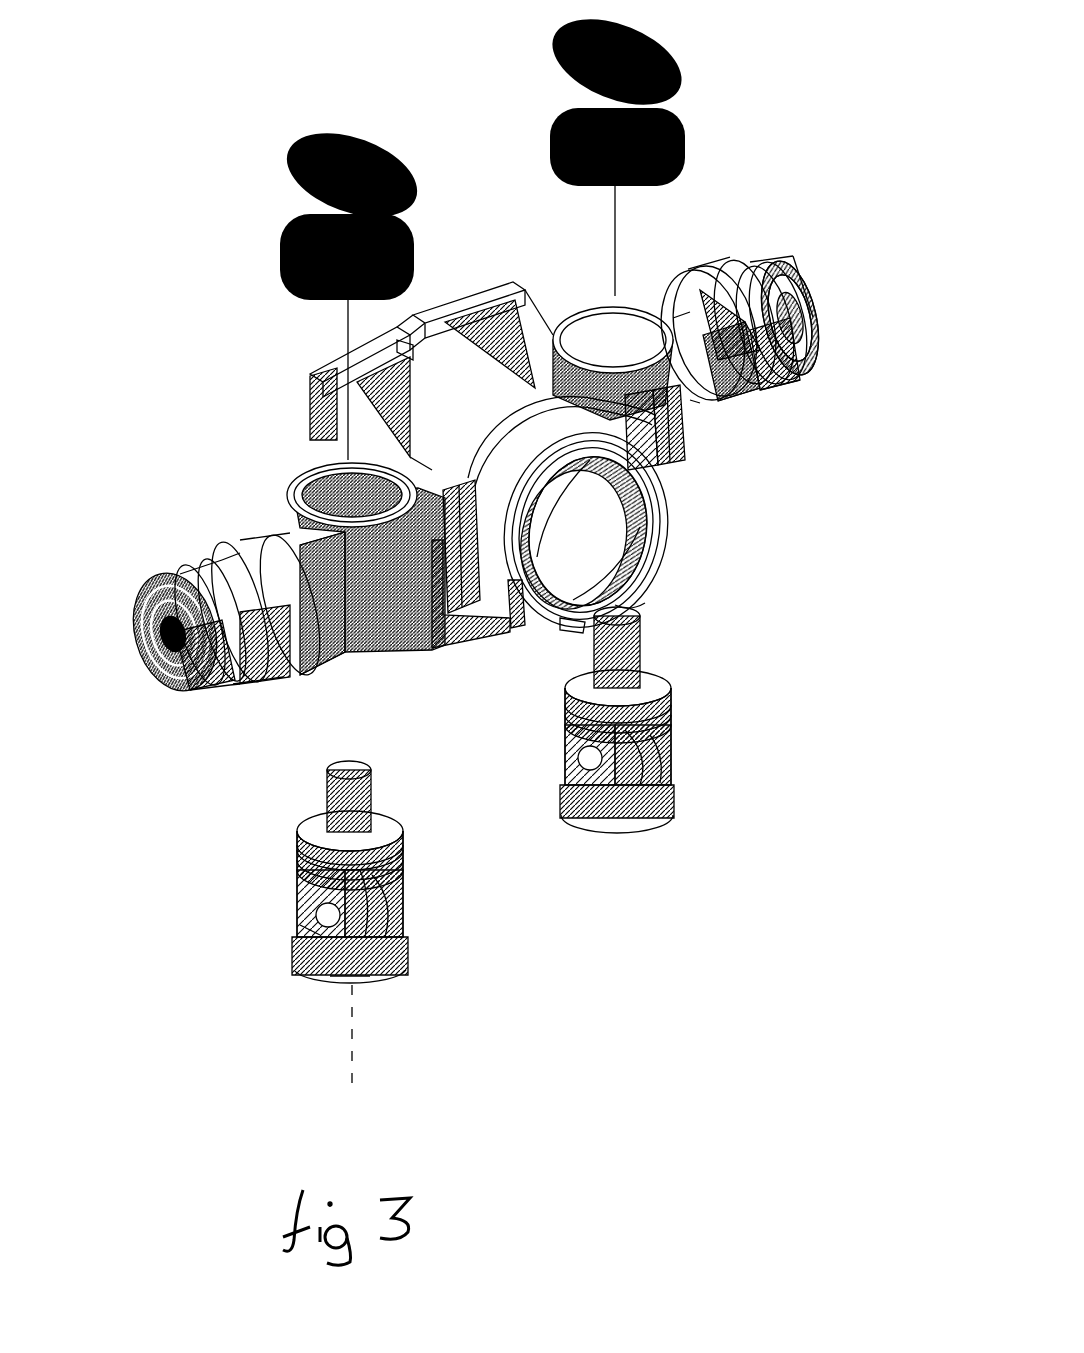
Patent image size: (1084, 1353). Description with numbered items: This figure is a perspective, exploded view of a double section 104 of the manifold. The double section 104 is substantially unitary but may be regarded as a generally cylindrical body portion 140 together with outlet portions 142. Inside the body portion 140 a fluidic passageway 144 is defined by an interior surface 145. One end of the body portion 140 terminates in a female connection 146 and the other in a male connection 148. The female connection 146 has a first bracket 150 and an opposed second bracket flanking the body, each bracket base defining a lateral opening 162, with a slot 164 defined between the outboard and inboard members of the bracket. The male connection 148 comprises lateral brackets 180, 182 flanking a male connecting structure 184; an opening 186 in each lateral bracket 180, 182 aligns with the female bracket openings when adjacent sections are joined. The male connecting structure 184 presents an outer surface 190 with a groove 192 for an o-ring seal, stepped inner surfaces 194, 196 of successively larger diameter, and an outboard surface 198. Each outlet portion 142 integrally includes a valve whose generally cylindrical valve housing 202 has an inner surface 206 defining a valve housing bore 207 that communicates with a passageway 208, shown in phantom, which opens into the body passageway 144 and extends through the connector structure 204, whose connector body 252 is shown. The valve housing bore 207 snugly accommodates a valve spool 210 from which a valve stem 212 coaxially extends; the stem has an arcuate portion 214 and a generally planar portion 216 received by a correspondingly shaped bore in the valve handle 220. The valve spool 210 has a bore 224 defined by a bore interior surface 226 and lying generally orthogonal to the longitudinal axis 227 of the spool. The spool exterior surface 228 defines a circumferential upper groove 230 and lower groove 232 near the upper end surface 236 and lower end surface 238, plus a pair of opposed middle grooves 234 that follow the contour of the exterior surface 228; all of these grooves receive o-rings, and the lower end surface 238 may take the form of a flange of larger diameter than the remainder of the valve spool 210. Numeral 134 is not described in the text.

The double section 104 is at (813, 297).
The upper port 134 is at (330, 440).
The body portion 140 is at (540, 367).
The outlet portion 142 is at (273, 673).
The fluidic passageway 144 is at (617, 550).
The interior surface 145 is at (567, 507).
The female connection 146 is at (495, 283).
The male connection 148 is at (617, 593).
The first bracket 150 is at (433, 298).
The lateral opening 162 is at (327, 383).
The slot 164 is at (484, 273).
The lateral bracket 180 is at (500, 623).
The lateral bracket 182 is at (680, 463).
The male connecting structure 184 is at (570, 627).
The opening 186 is at (692, 413).
The outer surface 190 is at (555, 464).
The groove 192 is at (520, 613).
The inner surface 194 is at (615, 567).
The inner surface 196 is at (600, 527).
The outboard surface 198 is at (633, 587).
The valve housing 202 is at (280, 523).
The connector structure 204 is at (187, 560).
The inner surface 206 is at (303, 467).
The valve housing bore 207 is at (330, 467).
The passageway 208 is at (390, 640).
The valve spool 210 is at (676, 757).
The valve stem 212 is at (373, 790).
The arcuate portion 214 is at (330, 793).
The planar portion 216 is at (340, 767).
The valve handle 220 is at (290, 170).
The bore 224 is at (297, 907).
The bore interior surface 226 is at (297, 920).
The longitudinal axis 227 is at (360, 1093).
The exterior surface 228 is at (300, 970).
The upper groove 230 is at (397, 850).
The lower groove 232 is at (390, 987).
The middle groove 234 is at (397, 870).
The upper end surface 236 is at (310, 833).
The lower end surface 238 is at (403, 967).
The connector body 252 is at (213, 562).